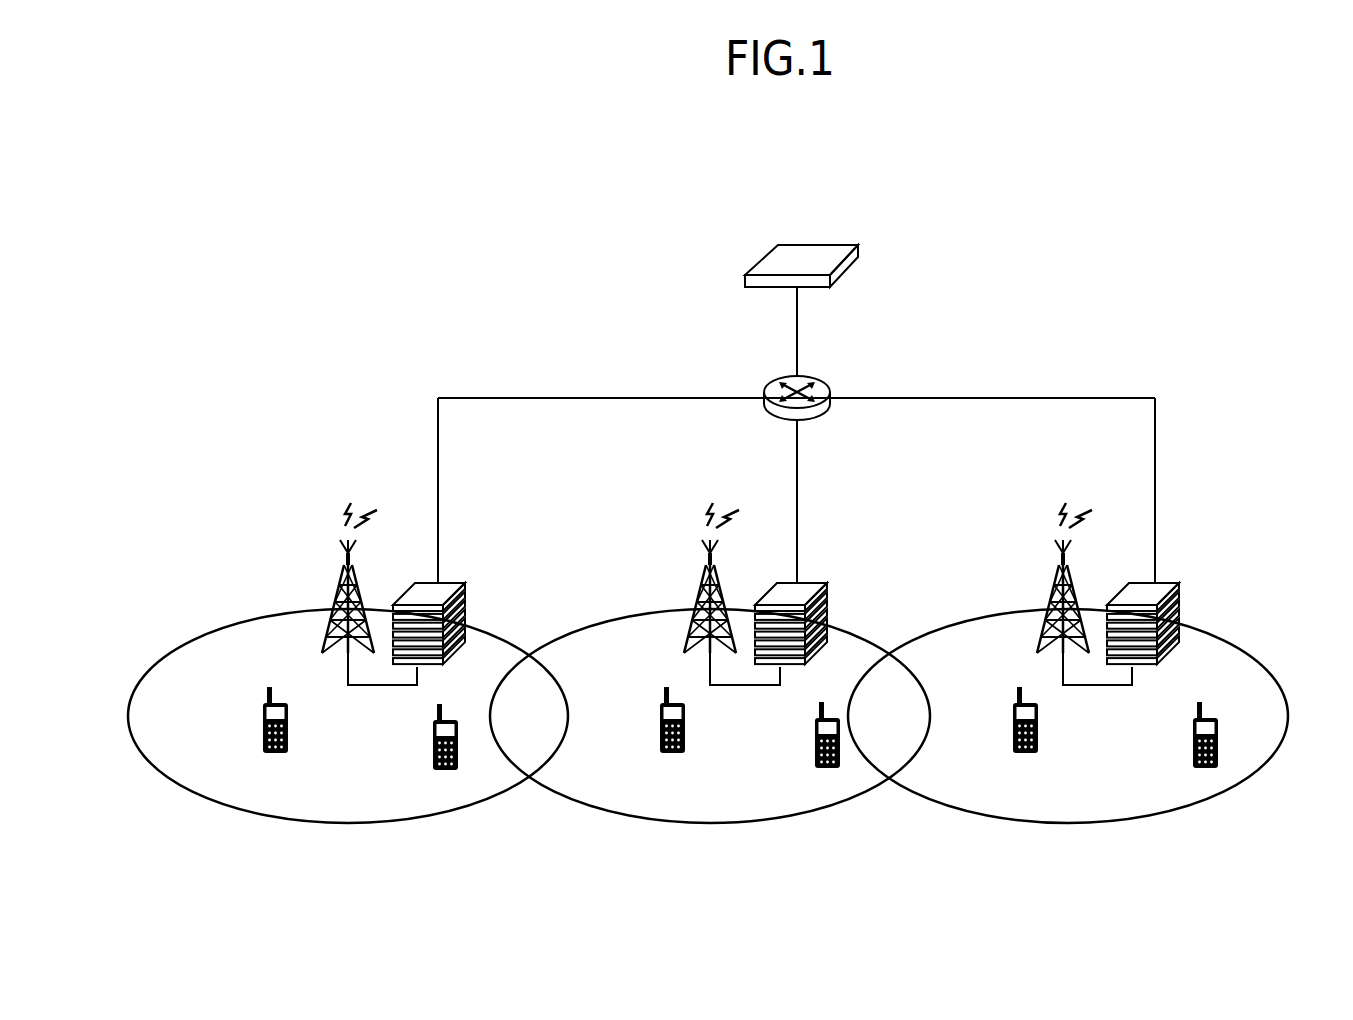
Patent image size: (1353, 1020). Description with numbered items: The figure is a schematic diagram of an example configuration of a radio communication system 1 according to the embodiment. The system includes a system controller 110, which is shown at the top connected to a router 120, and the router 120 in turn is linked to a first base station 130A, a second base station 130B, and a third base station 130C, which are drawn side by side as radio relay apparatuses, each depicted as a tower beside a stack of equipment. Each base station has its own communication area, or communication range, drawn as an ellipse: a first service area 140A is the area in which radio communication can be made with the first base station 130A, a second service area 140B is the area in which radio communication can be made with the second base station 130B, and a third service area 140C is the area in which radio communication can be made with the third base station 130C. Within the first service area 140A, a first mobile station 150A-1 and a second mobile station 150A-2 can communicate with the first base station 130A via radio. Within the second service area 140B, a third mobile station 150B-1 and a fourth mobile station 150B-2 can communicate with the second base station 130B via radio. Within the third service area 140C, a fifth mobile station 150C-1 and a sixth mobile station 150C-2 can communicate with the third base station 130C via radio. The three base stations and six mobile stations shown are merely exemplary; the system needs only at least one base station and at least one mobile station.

The radio communication system 1 is at (1205, 172).
The system controller 110 is at (843, 245).
The router 120 is at (806, 378).
The first base station 130A is at (340, 588).
The second base station 130B is at (702, 588).
The third base station 130C is at (1055, 588).
The first service area 140A is at (268, 815).
The second service area 140B is at (648, 822).
The third service area 140C is at (1035, 823).
The first mobile station 150A-1 is at (263, 730).
The second mobile station 150A-2 is at (433, 735).
The third mobile station 150B-1 is at (660, 723).
The fourth mobile station 150B-2 is at (815, 738).
The fifth mobile station 150C-1 is at (1013, 720).
The sixth mobile station 150C-2 is at (1193, 735).